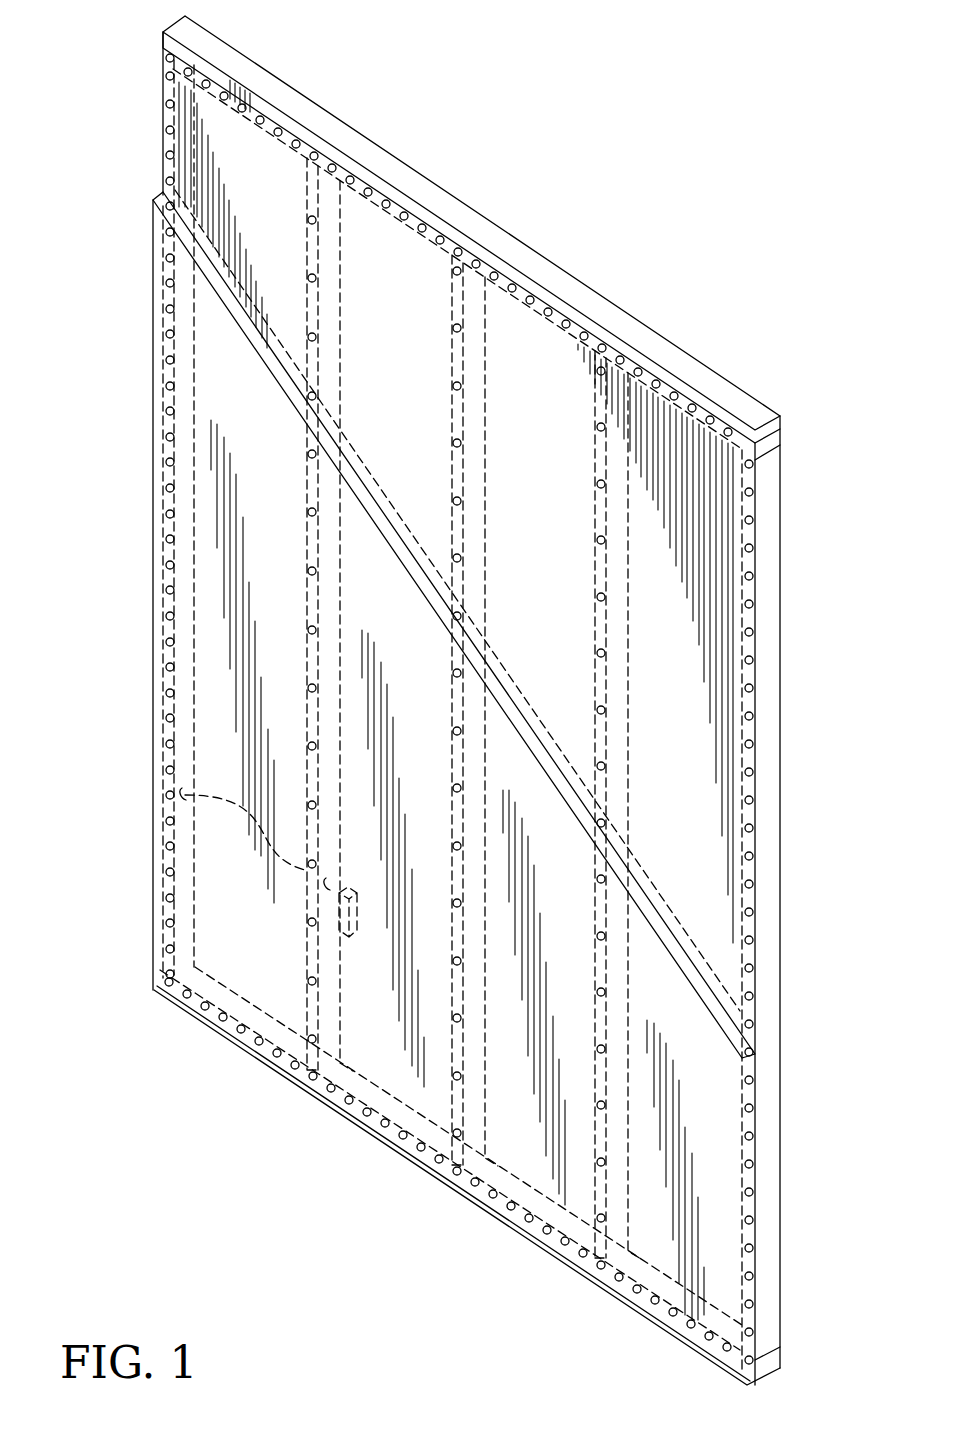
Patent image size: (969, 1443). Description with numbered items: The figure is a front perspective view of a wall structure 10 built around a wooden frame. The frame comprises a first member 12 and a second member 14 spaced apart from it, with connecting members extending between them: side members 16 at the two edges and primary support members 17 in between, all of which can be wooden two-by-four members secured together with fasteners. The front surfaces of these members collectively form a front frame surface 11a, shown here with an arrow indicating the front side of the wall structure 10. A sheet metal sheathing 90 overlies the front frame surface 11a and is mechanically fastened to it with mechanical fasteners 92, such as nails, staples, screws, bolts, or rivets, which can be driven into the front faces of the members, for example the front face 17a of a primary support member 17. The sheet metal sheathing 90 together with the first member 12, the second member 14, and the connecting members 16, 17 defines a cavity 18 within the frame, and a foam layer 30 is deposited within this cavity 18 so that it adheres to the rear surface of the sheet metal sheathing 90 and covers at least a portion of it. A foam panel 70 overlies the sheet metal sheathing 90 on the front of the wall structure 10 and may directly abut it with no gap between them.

The wall structure 10 is at (136, 14).
The front frame surface 11a is at (286, 1094).
The first member 12 is at (788, 404).
The second member 14 is at (770, 1372).
The side members 16 is at (162, 118).
The primary support members 17 is at (490, 368).
The front face of primary support member 17a is at (453, 312).
The cavity 18 is at (656, 663).
The foam layer 30 is at (677, 920).
The foam panel 70 is at (707, 1140).
The sheet metal sheathing 90 is at (222, 197).
The mechanical fasteners 92 is at (597, 420).